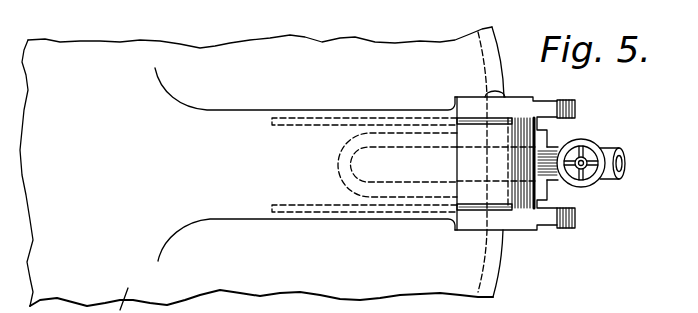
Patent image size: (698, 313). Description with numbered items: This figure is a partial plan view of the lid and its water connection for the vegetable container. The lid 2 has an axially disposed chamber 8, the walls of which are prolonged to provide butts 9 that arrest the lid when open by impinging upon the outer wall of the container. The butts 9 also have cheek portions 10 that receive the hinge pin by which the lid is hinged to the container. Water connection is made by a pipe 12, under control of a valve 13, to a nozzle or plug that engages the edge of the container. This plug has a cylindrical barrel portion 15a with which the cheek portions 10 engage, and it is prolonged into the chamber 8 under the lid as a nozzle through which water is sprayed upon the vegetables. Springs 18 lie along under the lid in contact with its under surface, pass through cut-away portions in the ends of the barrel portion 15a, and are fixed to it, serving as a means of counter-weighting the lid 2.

The lid 2 is at (262, 168).
The chamber 8 is at (397, 165).
The butts 9 is at (558, 103).
The cheek portions 10 is at (520, 230).
The pipe 12 is at (607, 149).
The valve 13 is at (588, 182).
The cylindrical barrel portion 15a is at (538, 211).
The springs 18 is at (385, 118).